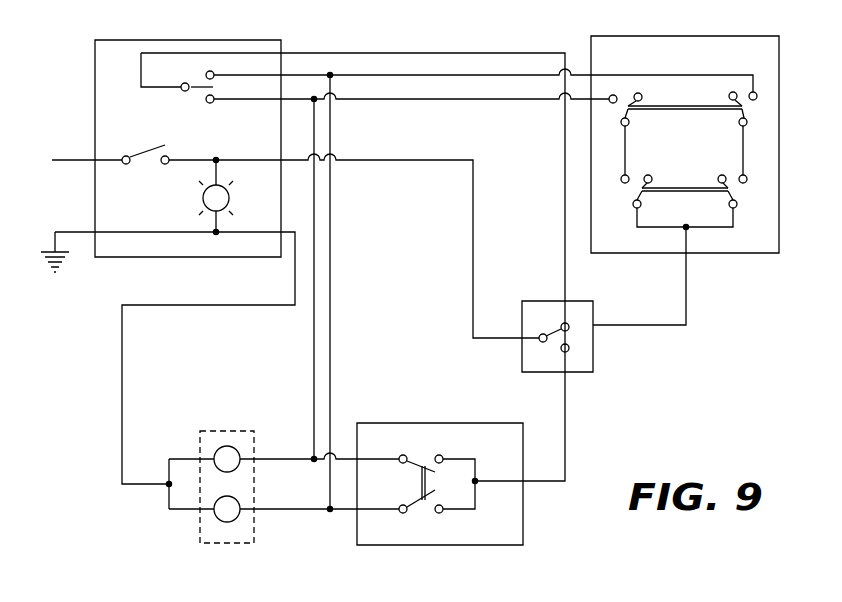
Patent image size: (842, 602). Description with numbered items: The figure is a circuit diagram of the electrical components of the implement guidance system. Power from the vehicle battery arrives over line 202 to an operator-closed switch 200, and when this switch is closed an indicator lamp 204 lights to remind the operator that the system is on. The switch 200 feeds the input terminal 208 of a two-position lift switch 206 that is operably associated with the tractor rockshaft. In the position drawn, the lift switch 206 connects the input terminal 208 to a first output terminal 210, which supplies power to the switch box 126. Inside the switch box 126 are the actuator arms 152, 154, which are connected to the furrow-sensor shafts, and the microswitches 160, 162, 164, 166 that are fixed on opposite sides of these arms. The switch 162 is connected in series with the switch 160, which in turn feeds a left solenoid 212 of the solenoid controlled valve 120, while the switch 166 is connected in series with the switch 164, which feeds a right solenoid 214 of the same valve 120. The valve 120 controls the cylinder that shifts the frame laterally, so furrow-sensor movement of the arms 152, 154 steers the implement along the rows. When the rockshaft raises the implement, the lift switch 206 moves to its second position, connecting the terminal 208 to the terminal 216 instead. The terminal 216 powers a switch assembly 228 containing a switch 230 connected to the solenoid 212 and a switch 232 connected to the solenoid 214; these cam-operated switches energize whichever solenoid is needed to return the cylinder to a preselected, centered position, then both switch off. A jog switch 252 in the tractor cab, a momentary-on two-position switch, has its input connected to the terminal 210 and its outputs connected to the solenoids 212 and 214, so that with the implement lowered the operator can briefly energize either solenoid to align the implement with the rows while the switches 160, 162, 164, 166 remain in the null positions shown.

The solenoid controlled valve 120 is at (244, 490).
The switch box 126 is at (685, 132).
The actuator arm 152 is at (706, 105).
The actuator arm 154 is at (707, 187).
The microswitch 160 is at (629, 123).
The microswitch 162 is at (641, 177).
The microswitch 164 is at (741, 124).
The microswitch 166 is at (728, 177).
The switch 200 is at (143, 152).
The line 202 is at (88, 158).
The indicator lamp 204 is at (203, 198).
The two-position lift switch 206 is at (563, 348).
The input terminal 208 is at (541, 336).
The first output terminal 210 is at (568, 325).
The left solenoid 212 is at (233, 446).
The right solenoid 214 is at (222, 562).
The terminal 216 is at (568, 352).
The switch assembly 228 is at (450, 468).
The switch 230 is at (410, 455).
The switch 232 is at (410, 513).
The jog switch 252 is at (208, 70).